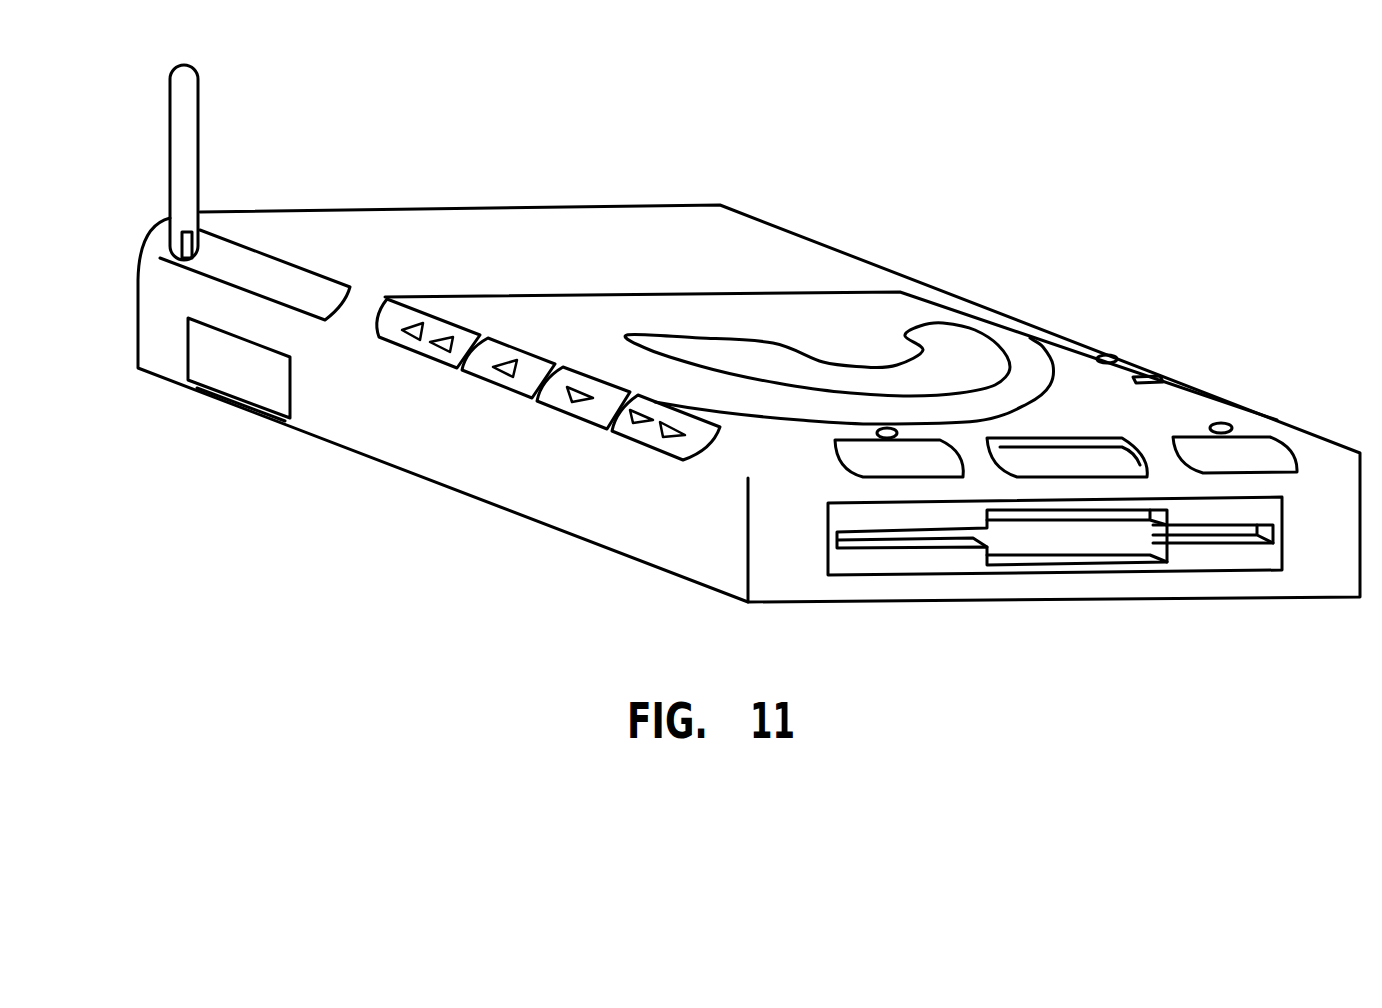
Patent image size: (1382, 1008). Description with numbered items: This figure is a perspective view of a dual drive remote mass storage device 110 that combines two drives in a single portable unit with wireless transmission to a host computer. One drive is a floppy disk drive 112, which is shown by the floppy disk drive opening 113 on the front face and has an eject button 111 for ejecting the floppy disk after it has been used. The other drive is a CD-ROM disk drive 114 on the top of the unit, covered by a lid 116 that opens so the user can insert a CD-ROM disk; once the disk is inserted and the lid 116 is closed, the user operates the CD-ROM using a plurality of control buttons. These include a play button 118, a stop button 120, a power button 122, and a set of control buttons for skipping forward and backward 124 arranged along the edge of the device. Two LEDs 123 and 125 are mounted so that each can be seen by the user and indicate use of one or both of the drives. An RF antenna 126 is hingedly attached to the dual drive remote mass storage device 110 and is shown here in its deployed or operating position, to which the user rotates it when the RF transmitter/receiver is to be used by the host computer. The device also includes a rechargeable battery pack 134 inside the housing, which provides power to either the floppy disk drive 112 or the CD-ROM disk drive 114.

The dual drive remote mass storage device 110 is at (970, 147).
The eject button 111 is at (1280, 454).
The floppy disk drive 112 is at (1217, 557).
The floppy disk drive opening 113 is at (1038, 545).
The CD-ROM disk drive 114 is at (962, 343).
The lid 116 is at (885, 312).
The play button 118 is at (1230, 404).
The stop button 120 is at (1133, 371).
The power button 122 is at (1013, 323).
The LED 123 is at (887, 427).
The control buttons for skipping forward and backward 124 is at (565, 403).
The LED 125 is at (1217, 423).
The RF antenna 126 is at (168, 118).
The battery pack 134 is at (222, 370).